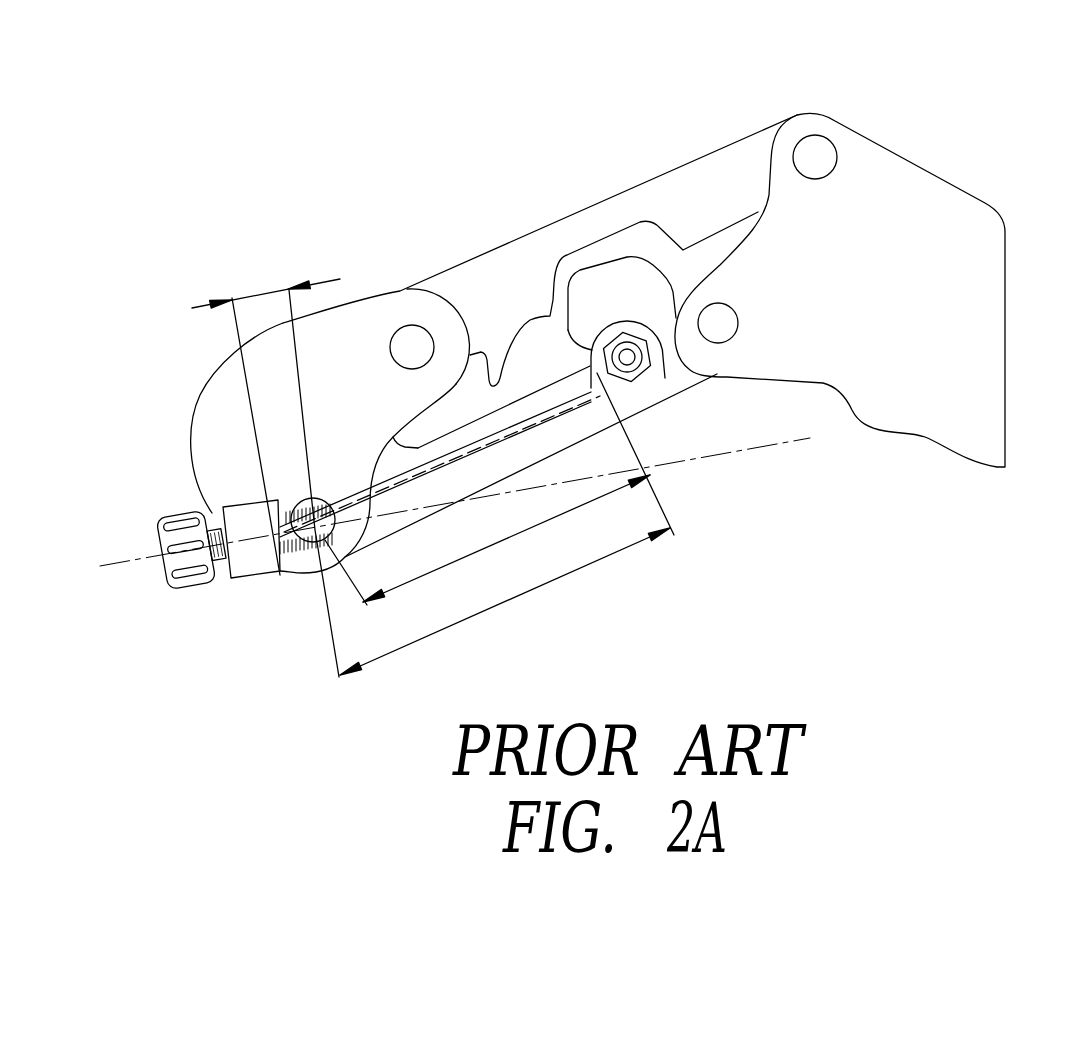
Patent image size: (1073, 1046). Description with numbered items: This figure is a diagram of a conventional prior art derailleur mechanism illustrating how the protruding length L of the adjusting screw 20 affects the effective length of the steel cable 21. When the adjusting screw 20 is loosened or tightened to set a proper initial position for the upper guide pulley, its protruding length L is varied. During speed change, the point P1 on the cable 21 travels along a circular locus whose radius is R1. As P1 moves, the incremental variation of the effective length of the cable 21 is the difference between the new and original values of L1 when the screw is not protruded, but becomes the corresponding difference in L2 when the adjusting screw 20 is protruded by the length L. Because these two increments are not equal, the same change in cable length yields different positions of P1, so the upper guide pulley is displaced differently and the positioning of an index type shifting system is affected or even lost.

The adjusting screw 20 is at (190, 583).
The cable 21 is at (537, 413).
The radius of the locus of P1 R1 is at (418, 340).
The cable point P1 is at (628, 352).
The protruding length of the adjusting screw L is at (266, 468).
The effective length of the cable (without protrusion) L1 is at (499, 489).
The effective length of the cable (with protrusion) L2 is at (505, 601).